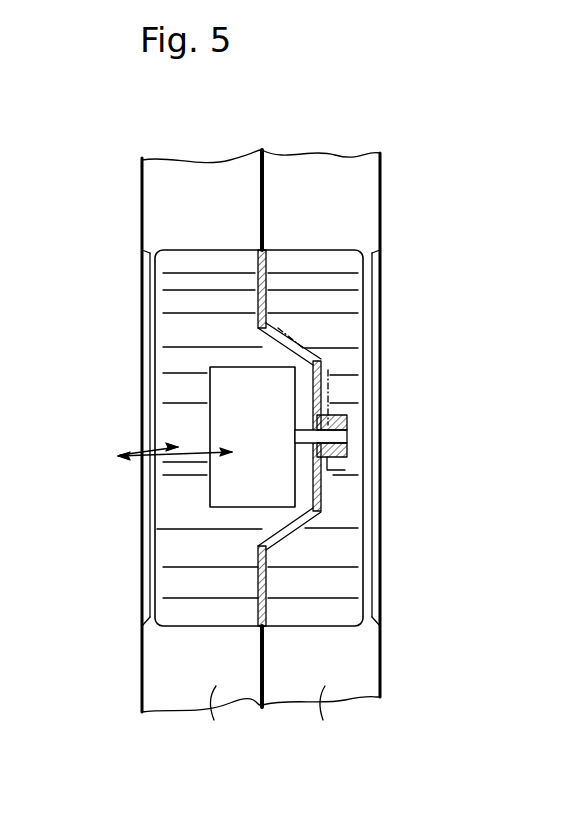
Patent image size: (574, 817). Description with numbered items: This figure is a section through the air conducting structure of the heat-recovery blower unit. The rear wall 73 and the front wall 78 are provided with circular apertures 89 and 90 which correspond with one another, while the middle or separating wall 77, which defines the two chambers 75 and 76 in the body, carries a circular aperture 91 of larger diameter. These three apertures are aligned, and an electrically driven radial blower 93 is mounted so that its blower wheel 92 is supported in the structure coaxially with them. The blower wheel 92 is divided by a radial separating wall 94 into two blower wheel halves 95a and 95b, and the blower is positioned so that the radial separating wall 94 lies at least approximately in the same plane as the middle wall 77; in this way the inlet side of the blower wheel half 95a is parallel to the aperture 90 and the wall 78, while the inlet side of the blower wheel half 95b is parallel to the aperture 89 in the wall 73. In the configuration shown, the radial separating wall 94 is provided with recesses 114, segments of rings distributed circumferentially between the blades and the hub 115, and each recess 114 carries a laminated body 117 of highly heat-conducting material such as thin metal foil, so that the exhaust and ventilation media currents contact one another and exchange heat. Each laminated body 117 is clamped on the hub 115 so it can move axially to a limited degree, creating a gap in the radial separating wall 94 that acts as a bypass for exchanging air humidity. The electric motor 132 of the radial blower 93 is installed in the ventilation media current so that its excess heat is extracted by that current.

The rear wall 73 is at (140, 196).
The chamber 75 is at (204, 723).
The chamber 76 is at (314, 723).
The middle or separating wall 77 is at (262, 150).
The front wall 78 is at (384, 197).
The circular aperture 89 is at (143, 531).
The circular aperture 90 is at (375, 548).
The circular aperture 91 is at (265, 238).
The blower wheel 92 is at (290, 617).
The radial blower 93 is at (153, 458).
The radial separating wall 94 is at (262, 570).
The blower wheel half 95a is at (163, 303).
The blower wheel half 95b is at (358, 298).
The recesses 114 is at (292, 354).
The hub 115 is at (345, 427).
The laminated body 117 is at (320, 362).
The electric motor 132 is at (222, 427).